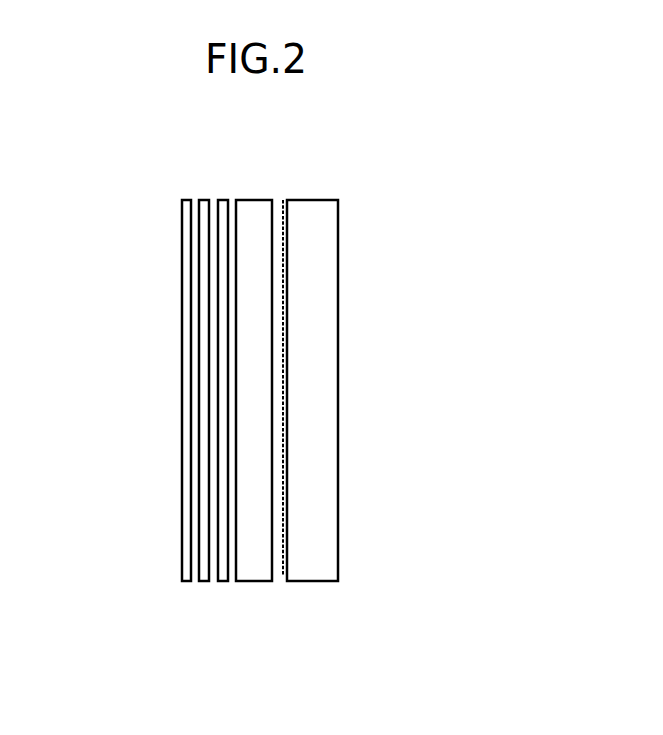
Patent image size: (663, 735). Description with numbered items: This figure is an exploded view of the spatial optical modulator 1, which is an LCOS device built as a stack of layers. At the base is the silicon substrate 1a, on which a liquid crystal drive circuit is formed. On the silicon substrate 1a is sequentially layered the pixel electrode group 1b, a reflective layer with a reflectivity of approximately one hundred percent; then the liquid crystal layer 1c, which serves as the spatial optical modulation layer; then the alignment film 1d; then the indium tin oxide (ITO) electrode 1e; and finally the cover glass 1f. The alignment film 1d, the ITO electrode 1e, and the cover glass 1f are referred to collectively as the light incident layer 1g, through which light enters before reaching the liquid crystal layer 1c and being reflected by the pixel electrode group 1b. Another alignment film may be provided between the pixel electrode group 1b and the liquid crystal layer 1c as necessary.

The spatial optical modulator 1 is at (180, 191).
The silicon substrate 1a is at (312, 583).
The pixel electrode group 1b is at (283, 566).
The liquid crystal layer 1c is at (255, 583).
The alignment film 1d is at (223, 583).
The ITO electrode 1e is at (204, 583).
The cover glass 1f is at (186, 583).
The light incident layer 1g is at (232, 678).